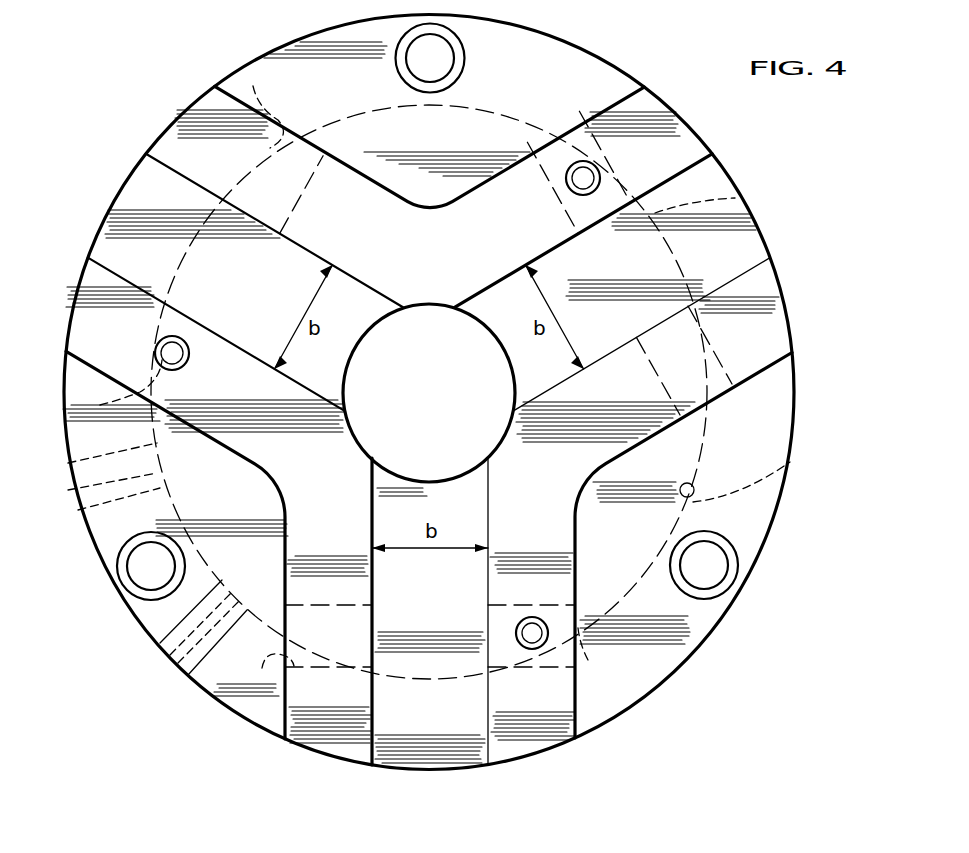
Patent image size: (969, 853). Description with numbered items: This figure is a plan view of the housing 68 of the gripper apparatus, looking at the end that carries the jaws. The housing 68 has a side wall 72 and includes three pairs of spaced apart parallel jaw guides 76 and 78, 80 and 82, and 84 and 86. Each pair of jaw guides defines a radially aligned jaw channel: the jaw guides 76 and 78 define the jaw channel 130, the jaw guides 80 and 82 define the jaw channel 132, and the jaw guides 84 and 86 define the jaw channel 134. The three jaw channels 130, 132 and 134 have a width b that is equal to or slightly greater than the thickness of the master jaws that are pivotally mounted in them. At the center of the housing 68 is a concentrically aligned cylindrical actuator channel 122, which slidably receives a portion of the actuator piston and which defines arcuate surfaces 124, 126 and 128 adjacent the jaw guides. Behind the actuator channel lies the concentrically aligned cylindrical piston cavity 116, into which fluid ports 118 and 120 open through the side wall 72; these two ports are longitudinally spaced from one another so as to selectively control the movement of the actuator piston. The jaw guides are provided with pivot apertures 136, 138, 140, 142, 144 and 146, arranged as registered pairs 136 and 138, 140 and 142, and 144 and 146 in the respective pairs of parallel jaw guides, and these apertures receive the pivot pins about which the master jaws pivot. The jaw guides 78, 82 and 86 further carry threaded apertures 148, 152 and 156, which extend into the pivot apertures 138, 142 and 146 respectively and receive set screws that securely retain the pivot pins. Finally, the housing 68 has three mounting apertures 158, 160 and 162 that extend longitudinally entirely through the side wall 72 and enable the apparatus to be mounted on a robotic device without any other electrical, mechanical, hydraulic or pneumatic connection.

The housing 68 is at (191, 713).
The side wall 72 is at (742, 586).
The jaw guide 76 is at (330, 746).
The jaw guide 78 is at (553, 722).
The jaw guide 80 is at (770, 311).
The jaw guide 82 is at (648, 135).
The jaw guide 84 is at (181, 132).
The jaw guide 86 is at (78, 326).
The cylindrical piston cavity 116 is at (774, 483).
The fluid port 118 is at (76, 486).
The fluid port 120 is at (168, 648).
The cylindrical actuator channel 122 is at (494, 426).
The arcuate surface 124 is at (470, 462).
The arcuate surface 126 is at (432, 308).
The arcuate surface 128 is at (365, 456).
The jaw channel 130 is at (489, 718).
The jaw channel 132 is at (737, 277).
The jaw channel 134 is at (116, 274).
The pivot aperture 136 is at (263, 665).
The pivot aperture 138 is at (589, 662).
The pivot aperture 140 is at (780, 338).
The pivot aperture 142 is at (736, 200).
The pivot aperture 144 is at (254, 86).
The pivot aperture 146 is at (76, 394).
The threaded aperture 148 is at (548, 636).
The threaded aperture 152 is at (572, 165).
The threaded aperture 156 is at (82, 286).
The mounting aperture 158 is at (126, 566).
The mounting aperture 160 is at (718, 566).
The mounting aperture 162 is at (408, 60).